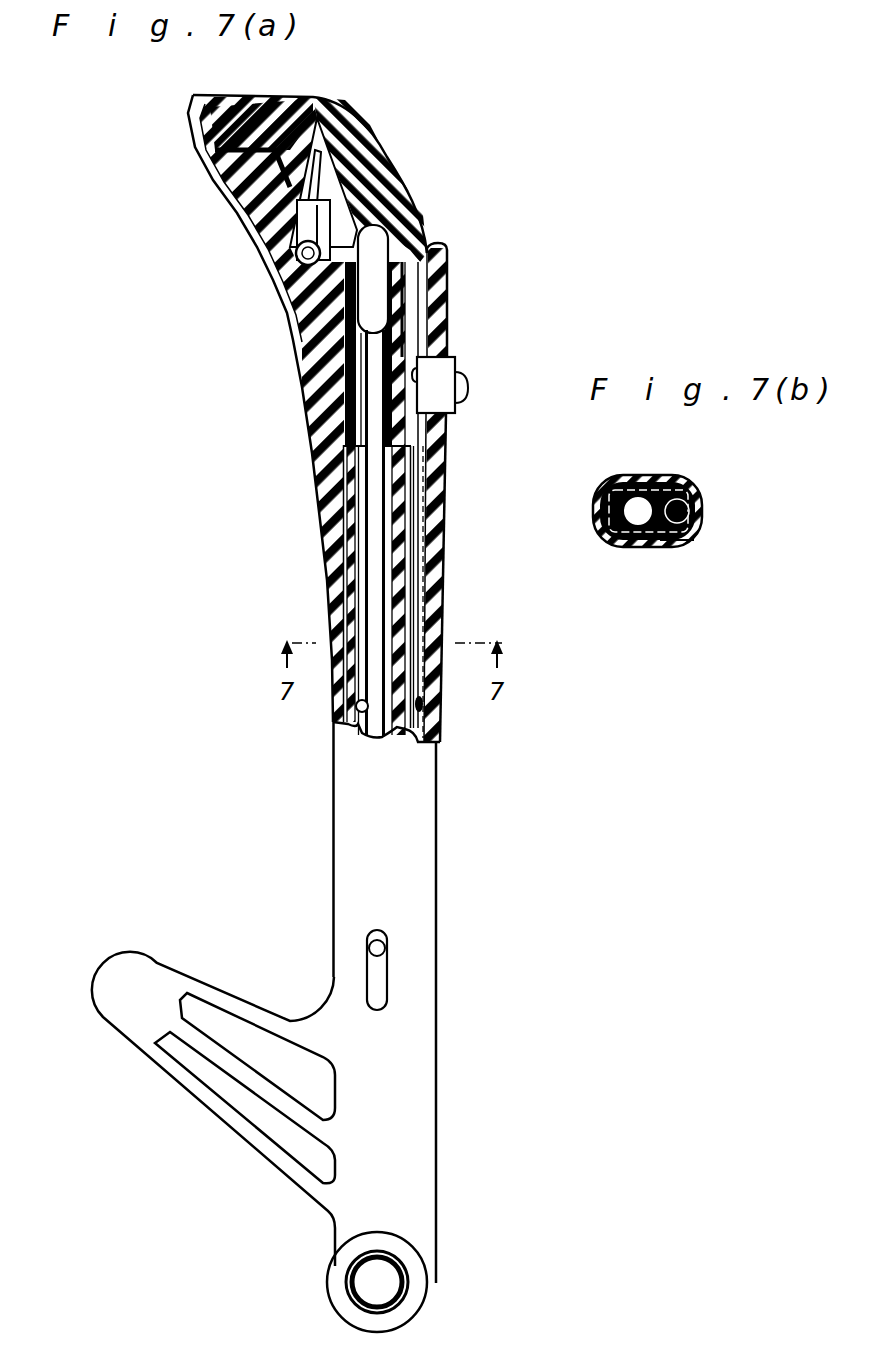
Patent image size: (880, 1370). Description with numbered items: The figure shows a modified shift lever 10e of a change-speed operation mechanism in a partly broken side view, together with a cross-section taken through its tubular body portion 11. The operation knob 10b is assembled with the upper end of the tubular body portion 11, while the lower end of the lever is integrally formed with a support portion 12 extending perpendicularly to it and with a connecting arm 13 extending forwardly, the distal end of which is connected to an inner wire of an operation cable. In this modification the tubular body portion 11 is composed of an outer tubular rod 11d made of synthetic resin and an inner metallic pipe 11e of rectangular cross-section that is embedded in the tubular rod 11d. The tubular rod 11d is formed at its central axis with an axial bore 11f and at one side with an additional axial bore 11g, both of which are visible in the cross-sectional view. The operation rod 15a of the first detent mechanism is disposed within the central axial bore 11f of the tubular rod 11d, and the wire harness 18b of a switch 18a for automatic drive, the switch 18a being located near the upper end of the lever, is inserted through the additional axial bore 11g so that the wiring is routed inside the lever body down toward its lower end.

In FIG. 7A, the operation knob 10b is at (420, 176).
In FIG. 7A, the modified shift lever 10e is at (322, 850).
In FIG. 7A, the tubular body portion 11 is at (446, 904).
In FIG. 7A, the outer tubular rod 11d is at (434, 602).
In FIG. 7B, the outer tubular rod 11d is at (700, 531).
In FIG. 7A, the inner metallic pipe 11e is at (327, 592).
In FIG. 7B, the inner metallic pipe 11e is at (612, 478).
In FIG. 7A, the axial bore 11f is at (345, 718).
In FIG. 7B, the axial bore 11f is at (637, 548).
In FIG. 7A, the additional axial bore 11g is at (437, 727).
In FIG. 7B, the additional axial bore 11g is at (680, 548).
In FIG. 7A, the support portion 12 is at (418, 1243).
In FIG. 7A, the connecting arm 13 is at (182, 960).
In FIG. 7A, the operation rod 15a is at (374, 396).
In FIG. 7A, the switch 18a is at (486, 355).
In FIG. 7A, the wire harness 18b is at (413, 497).
In FIG. 7B, the wire harness 18b is at (690, 478).